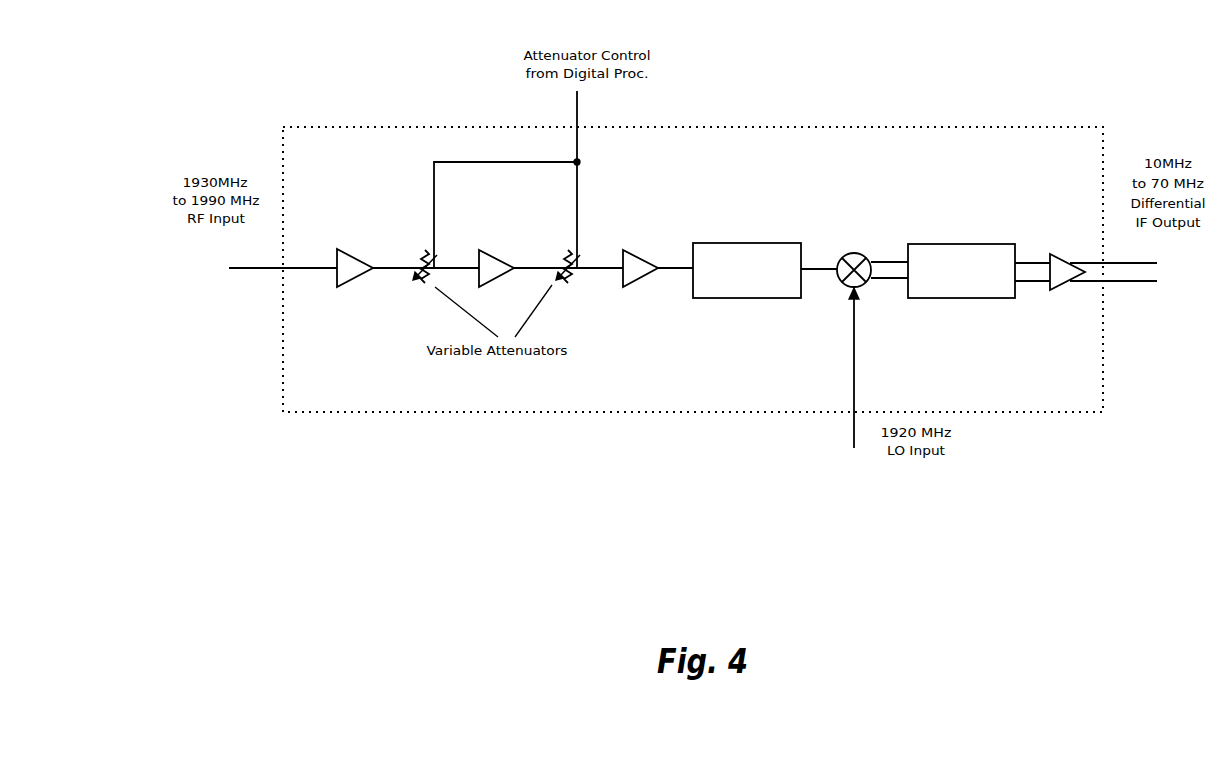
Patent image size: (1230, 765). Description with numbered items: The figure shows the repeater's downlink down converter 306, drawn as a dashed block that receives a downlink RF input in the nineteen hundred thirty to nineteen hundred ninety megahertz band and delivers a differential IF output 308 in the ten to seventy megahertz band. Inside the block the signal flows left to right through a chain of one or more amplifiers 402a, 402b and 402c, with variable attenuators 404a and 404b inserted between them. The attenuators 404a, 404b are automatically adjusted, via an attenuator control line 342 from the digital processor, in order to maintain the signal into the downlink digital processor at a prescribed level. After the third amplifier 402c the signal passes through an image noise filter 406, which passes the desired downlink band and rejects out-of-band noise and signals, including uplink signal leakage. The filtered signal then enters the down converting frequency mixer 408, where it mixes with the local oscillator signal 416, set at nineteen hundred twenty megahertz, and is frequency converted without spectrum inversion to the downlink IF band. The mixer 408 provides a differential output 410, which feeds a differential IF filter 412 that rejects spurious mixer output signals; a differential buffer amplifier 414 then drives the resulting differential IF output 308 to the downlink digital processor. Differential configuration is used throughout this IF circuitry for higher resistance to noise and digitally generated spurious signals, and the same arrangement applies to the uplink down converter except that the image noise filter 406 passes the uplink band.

The downlink down converter 306 is at (273, 143).
The attenuator control line from digital processor 342 is at (585, 119).
The amplifier 402a is at (355, 248).
The amplifier 402b is at (505, 233).
The amplifier 402c is at (640, 250).
The variable attenuator 404a is at (418, 287).
The variable attenuator 404b is at (577, 287).
The image noise filter 406 is at (738, 240).
The down converting frequency mixer 408 is at (853, 250).
The differential output 410 is at (882, 257).
The differential IF filter 412 is at (958, 240).
The differential buffer amplifier 414 is at (1061, 252).
The frequency mixer local oscillator signal 416 is at (845, 323).
The differential IF output 308 is at (1129, 290).